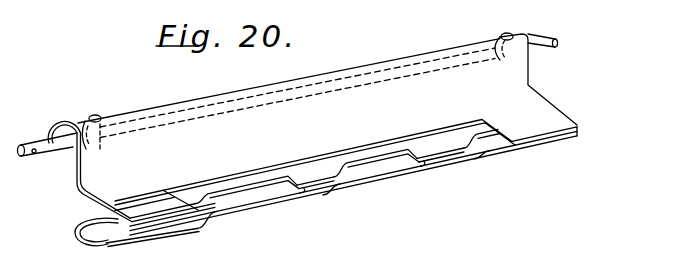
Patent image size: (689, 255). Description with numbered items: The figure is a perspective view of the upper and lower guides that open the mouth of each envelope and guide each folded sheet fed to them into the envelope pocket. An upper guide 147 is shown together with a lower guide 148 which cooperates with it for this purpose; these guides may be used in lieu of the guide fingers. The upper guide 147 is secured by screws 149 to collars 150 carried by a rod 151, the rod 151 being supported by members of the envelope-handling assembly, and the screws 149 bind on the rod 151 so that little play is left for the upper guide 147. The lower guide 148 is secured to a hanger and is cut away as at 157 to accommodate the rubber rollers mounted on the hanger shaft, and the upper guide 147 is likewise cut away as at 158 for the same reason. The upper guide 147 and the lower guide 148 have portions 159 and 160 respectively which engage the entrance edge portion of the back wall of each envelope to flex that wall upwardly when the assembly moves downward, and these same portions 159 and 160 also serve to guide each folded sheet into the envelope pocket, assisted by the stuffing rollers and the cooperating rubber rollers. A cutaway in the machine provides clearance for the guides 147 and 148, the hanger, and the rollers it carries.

The upper guide 147 is at (76, 181).
The lower guide 148 is at (80, 228).
The screws 149 is at (90, 116).
The collars 150 is at (98, 139).
The rod 151 is at (37, 142).
The cut away 157 is at (220, 213).
The cut away 158 is at (319, 156).
The portion 159 is at (155, 209).
The portion 160 is at (157, 229).